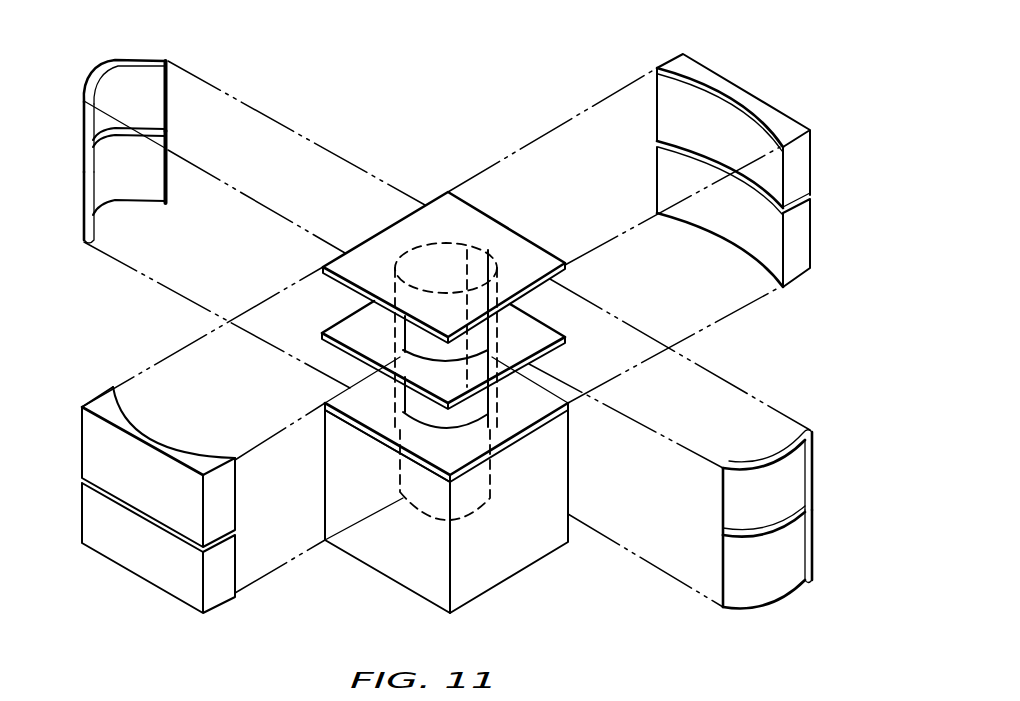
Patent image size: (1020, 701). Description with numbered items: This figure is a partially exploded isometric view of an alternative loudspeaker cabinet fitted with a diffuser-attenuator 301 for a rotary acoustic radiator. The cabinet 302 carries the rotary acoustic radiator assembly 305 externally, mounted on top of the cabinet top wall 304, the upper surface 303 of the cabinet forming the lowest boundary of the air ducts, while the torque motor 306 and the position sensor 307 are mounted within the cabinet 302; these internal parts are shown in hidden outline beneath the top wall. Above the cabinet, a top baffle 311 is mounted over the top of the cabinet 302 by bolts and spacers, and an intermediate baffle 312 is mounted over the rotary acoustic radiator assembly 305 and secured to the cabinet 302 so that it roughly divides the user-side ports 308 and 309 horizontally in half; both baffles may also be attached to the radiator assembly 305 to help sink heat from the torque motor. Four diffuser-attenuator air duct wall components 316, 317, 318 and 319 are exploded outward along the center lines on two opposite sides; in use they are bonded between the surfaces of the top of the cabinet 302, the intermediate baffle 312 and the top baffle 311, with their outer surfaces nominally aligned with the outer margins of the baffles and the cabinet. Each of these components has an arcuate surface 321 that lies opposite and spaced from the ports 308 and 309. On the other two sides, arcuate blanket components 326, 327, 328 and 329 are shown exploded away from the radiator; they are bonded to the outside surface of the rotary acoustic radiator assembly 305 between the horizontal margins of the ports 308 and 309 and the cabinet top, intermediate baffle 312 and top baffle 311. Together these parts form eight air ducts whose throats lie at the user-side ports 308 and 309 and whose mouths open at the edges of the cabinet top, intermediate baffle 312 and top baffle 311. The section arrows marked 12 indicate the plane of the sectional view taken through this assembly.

The diffuser-attenuator 301 is at (324, 105).
The cabinet 302 is at (568, 493).
The top surface of base block 303 is at (552, 438).
The cabinet top wall 304 is at (575, 408).
The rotary acoustic radiator assembly 305 is at (445, 243).
The torque motor 306 is at (412, 440).
The position sensor 307 is at (467, 517).
The user-side port 308 is at (433, 343).
The user-side port 309 is at (565, 282).
The top baffle 311 is at (484, 213).
The intermediate baffle 312 is at (565, 340).
The air duct wall component 316 is at (107, 402).
The air duct wall component 317 is at (650, 70).
The air duct wall component 318 is at (222, 593).
The air duct wall component 319 is at (667, 170).
The arcuate surface 321 is at (163, 432).
The arcuate blanket component 326 is at (776, 462).
The arcuate blanket component 327 is at (157, 106).
The arcuate blanket component 328 is at (735, 563).
The arcuate blanket component 329 is at (150, 198).
The section line for FIG. 12 is at (800, 163).